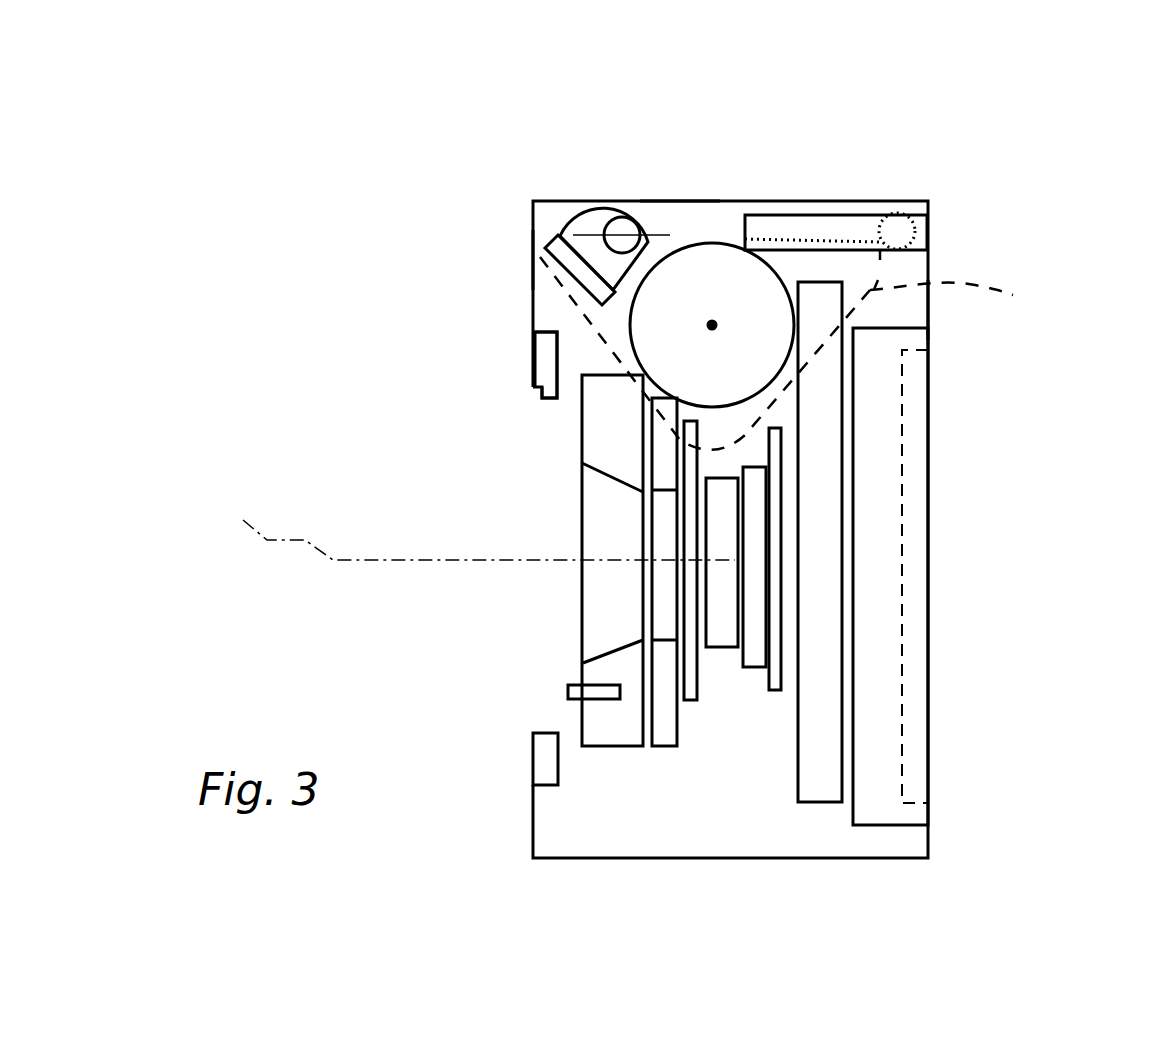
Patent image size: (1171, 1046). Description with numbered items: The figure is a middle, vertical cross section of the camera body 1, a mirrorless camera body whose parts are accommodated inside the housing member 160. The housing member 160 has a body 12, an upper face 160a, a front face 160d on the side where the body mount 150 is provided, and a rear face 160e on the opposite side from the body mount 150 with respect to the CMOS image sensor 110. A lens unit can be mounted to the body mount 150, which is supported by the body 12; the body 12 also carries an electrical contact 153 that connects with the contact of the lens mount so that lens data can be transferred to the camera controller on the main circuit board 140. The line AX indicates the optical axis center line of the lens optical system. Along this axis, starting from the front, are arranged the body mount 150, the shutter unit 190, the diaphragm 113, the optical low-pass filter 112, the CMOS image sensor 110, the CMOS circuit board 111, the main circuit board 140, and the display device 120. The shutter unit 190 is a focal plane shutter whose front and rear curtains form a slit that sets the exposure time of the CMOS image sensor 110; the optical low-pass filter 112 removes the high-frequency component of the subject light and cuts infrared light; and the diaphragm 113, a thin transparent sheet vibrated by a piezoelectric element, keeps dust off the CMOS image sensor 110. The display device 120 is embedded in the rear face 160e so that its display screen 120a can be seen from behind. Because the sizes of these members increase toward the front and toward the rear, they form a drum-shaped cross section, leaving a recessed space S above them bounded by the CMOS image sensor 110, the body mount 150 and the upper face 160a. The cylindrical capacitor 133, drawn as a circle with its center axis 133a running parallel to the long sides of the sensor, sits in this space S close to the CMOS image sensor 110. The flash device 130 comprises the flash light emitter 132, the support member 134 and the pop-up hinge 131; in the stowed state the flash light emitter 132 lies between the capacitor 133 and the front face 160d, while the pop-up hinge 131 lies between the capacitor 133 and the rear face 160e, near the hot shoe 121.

The camera body 1 is at (340, 390).
The body 12 is at (608, 722).
The CMOS image sensor 110 is at (752, 580).
The CMOS circuit board 111 is at (782, 533).
The optical low-pass filter 112 is at (720, 612).
The diaphragm 113 is at (690, 672).
The display device 120 is at (950, 576).
The display screen 120a is at (910, 438).
The hot shoe 121 is at (820, 237).
The flash device 130 is at (632, 187).
The pop-up hinge 131 is at (897, 232).
The flash light emitter 132 is at (555, 235).
The capacitor 133 is at (594, 283).
The center axis 133a is at (712, 325).
The support member 134 is at (808, 207).
The main circuit board 140 is at (820, 505).
The body mount 150 is at (545, 352).
The electrical contact 153 is at (577, 692).
The housing member 160 is at (741, 498).
The upper face 160a is at (678, 201).
The front face 160d is at (531, 258).
The rear face 160e is at (930, 310).
The shutter unit 190 is at (667, 727).
The optical axis center line AX is at (468, 530).
The space S is at (955, 297).